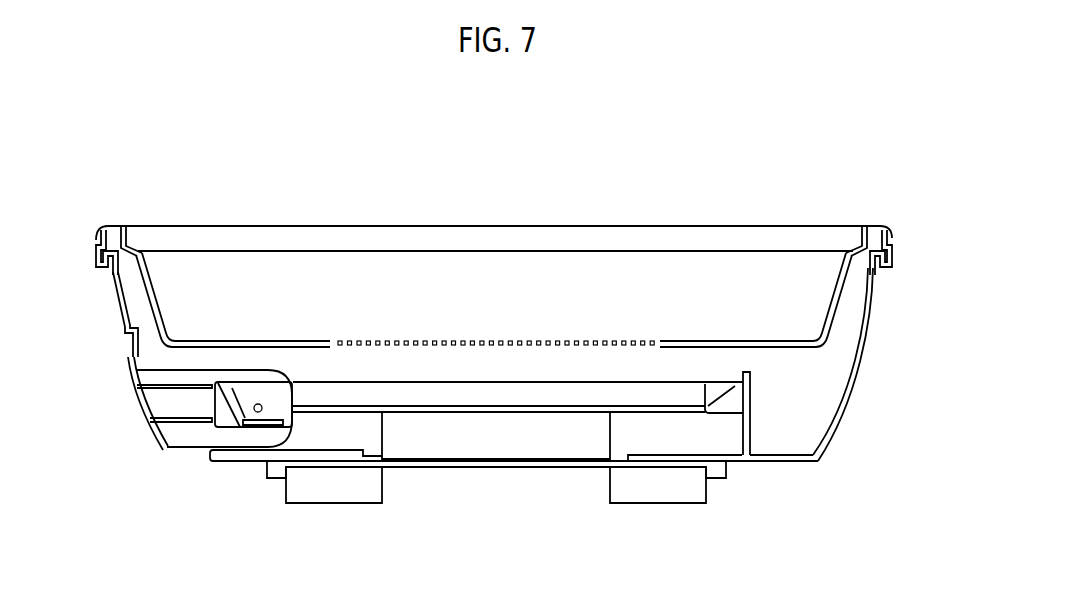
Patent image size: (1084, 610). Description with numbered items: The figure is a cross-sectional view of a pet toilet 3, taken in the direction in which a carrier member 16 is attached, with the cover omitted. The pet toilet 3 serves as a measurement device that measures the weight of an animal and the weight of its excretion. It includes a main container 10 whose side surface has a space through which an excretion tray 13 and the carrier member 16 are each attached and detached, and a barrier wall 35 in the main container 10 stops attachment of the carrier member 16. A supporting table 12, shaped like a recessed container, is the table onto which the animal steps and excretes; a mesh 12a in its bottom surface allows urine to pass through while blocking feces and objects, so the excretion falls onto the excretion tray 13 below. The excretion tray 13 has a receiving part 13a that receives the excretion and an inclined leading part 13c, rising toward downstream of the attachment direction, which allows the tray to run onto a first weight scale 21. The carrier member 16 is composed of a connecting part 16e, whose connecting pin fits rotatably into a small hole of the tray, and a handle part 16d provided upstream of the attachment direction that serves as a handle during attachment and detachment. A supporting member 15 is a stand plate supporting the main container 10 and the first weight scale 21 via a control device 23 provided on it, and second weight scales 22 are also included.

The pet toilet 3 is at (832, 156).
The main container 10 is at (868, 336).
The supporting table 12 is at (848, 285).
The mesh 12a is at (463, 340).
The excretion tray 13 is at (514, 385).
The receiving part 13a is at (428, 398).
The leading part 13c is at (717, 390).
The supporting member 15 is at (508, 473).
The carrier member 16 is at (139, 411).
The handle part 16d is at (130, 376).
The connecting part 16e is at (262, 428).
The first weight scale 21 is at (468, 443).
The second weight scales 22 is at (657, 487).
The control device 23 is at (562, 465).
The barrier wall 35 is at (752, 413).